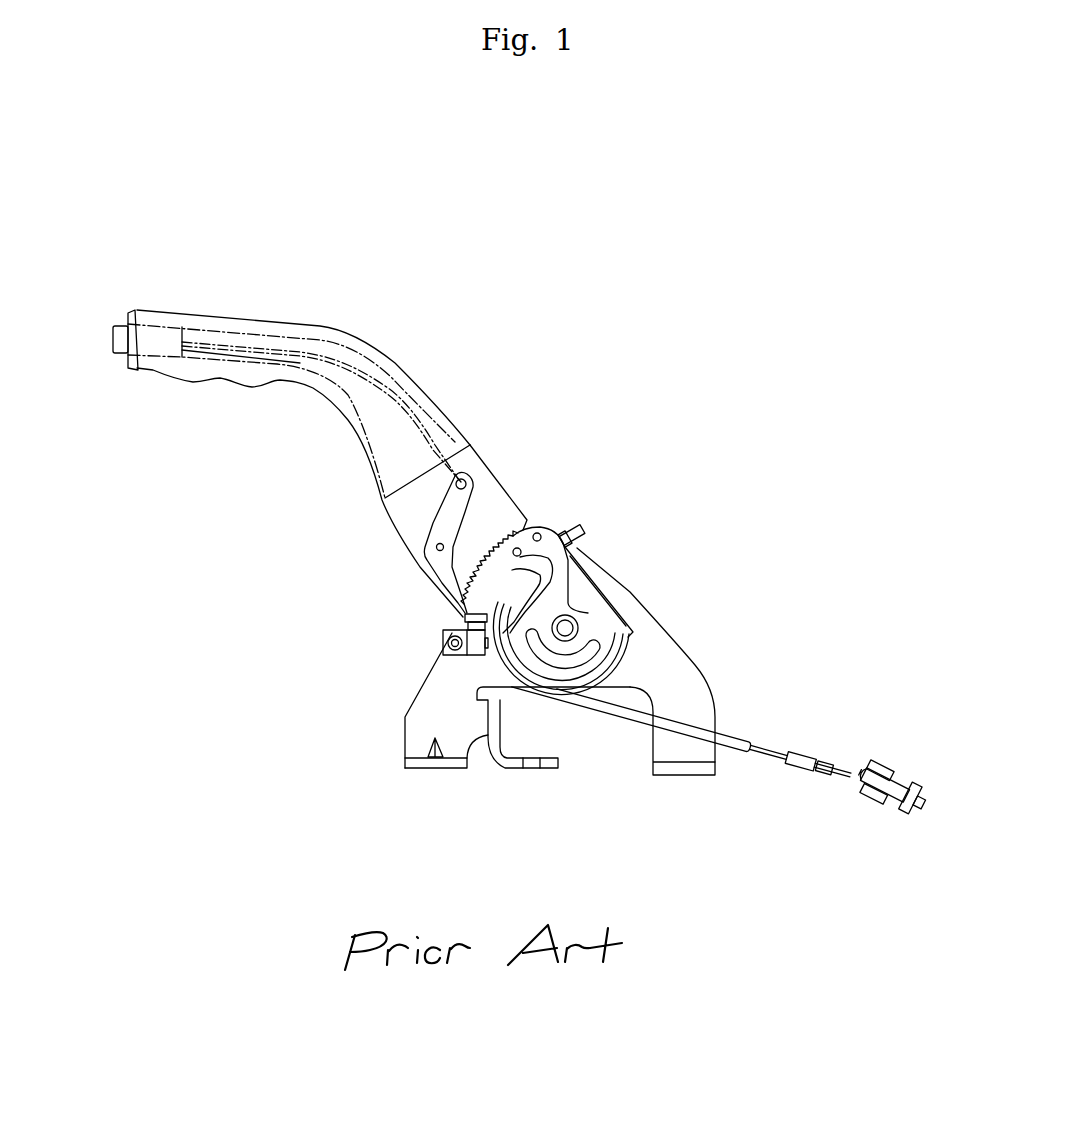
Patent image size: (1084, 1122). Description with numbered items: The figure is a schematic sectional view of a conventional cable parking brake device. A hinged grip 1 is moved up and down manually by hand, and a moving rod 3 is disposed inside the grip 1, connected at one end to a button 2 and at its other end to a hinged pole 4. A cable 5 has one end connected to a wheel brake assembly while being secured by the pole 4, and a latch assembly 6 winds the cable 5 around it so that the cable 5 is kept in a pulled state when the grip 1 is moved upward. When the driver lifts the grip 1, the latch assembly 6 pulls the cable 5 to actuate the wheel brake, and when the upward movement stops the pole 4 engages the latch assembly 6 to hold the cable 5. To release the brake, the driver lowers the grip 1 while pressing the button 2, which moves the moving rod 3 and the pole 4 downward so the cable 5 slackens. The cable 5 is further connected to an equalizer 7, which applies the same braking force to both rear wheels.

The grip 1 is at (184, 310).
The button 2 is at (113, 337).
The moving rod 3 is at (285, 338).
The pole 4 is at (433, 527).
The cable 5 is at (737, 740).
The latch assembly 6 is at (513, 531).
The equalizer 7 is at (882, 770).